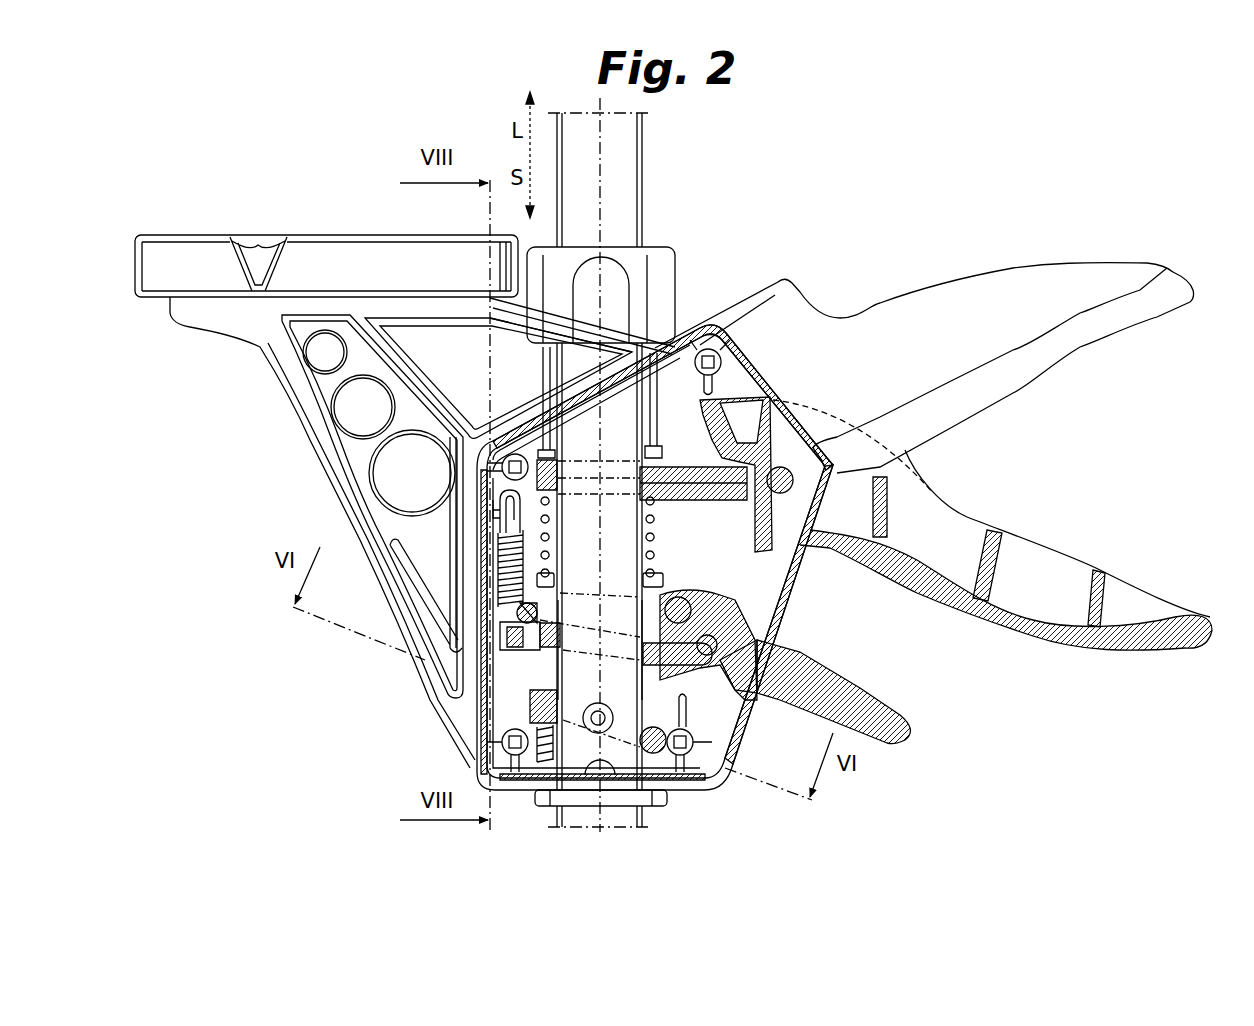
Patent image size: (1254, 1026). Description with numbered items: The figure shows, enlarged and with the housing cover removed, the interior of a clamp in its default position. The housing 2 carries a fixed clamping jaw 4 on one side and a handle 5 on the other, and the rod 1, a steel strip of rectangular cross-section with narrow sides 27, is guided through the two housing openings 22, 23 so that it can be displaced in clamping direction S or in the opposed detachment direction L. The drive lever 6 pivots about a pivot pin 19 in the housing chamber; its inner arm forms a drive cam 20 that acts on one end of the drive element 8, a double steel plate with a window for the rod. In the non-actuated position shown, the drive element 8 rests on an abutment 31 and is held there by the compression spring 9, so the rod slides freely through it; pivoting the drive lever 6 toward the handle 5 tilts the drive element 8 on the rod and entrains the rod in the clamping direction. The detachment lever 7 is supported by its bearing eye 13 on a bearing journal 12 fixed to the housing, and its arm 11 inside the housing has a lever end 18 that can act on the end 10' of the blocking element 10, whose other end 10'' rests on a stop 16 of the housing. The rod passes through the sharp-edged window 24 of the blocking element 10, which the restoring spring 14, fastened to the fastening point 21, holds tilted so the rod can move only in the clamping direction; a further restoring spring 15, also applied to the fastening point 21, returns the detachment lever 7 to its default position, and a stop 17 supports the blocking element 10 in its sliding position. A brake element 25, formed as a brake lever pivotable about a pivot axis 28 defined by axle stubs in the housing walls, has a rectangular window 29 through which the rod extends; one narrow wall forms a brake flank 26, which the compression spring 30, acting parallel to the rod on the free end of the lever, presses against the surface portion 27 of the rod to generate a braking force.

The rod 1 is at (628, 140).
The housing 2 is at (684, 344).
The fixed clamping jaw 4 is at (190, 262).
The handle 5 is at (992, 285).
The drive lever 6 is at (1060, 635).
The detachment lever 7 is at (890, 712).
The drive element 8 is at (513, 460).
The compression spring 9 is at (652, 528).
The blocking element 10 is at (463, 713).
The end of blocking element 10' is at (458, 655).
The end of blocking element 10'' is at (763, 689).
The arm 11 is at (514, 611).
The bearing journal 12 is at (690, 603).
The bearing eye 13 is at (716, 640).
The restoring spring 14 is at (500, 580).
The restoring spring 15 is at (508, 530).
The stop 16 is at (702, 655).
The stop 17 is at (686, 700).
The lever end 18 is at (590, 600).
The pivot pin 19 is at (787, 476).
The drive cam 20 is at (733, 468).
The fastening point 21 is at (510, 507).
The housing opening 22 is at (580, 322).
The housing opening 23 is at (640, 805).
The window 24 is at (700, 622).
The brake element 25 is at (548, 645).
The brake flank 26 is at (525, 618).
The narrow sides 27 is at (640, 172).
The pivot axis 28 is at (642, 730).
The rectangular window 29 is at (590, 705).
The spring 30 is at (540, 758).
The abutment 31 is at (545, 468).